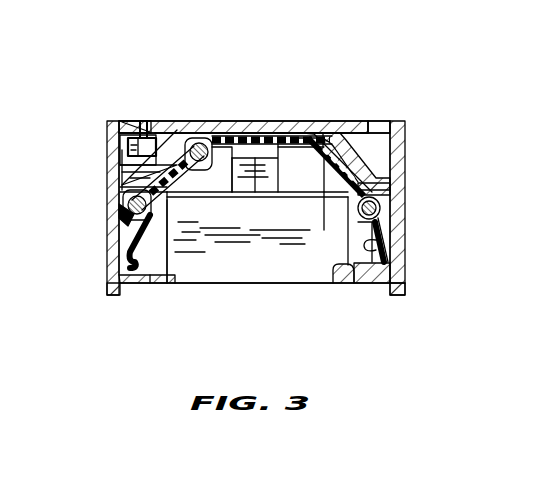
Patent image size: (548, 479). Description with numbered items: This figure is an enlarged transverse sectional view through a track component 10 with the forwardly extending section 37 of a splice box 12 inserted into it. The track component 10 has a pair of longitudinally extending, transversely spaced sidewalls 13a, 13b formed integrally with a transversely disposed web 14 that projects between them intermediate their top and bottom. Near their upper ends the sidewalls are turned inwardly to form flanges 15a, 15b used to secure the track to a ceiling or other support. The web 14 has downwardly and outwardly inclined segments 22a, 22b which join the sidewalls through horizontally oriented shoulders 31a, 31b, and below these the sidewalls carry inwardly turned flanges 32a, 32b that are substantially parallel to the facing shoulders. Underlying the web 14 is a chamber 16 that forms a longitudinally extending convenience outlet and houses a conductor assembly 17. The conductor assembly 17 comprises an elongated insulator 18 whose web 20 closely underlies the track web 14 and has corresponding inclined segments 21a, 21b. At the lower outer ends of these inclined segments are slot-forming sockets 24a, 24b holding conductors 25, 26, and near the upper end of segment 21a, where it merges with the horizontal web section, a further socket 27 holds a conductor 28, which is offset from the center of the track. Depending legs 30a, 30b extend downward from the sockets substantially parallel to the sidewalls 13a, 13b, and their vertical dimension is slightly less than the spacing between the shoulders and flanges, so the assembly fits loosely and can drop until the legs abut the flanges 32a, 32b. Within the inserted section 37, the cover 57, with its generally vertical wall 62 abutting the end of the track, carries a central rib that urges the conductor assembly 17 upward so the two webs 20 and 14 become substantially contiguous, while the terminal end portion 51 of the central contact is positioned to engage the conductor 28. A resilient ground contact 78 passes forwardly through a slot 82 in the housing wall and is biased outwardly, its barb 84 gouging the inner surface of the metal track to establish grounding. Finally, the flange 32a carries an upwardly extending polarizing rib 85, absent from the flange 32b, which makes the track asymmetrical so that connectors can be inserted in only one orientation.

The track component 10 is at (405, 265).
The splice box 12 is at (258, 266).
The sidewall 13a is at (404, 149).
The sidewall 13b is at (115, 154).
The web 14 is at (178, 121).
The flange 15a is at (386, 121).
The flange 15b is at (128, 127).
The chamber 16 is at (130, 285).
The conductor assembly 17 is at (404, 249).
The insulator 18 is at (404, 230).
The web 20 is at (320, 121).
The inclined segment 21a is at (323, 212).
The inclined segment 21b is at (205, 230).
The inclined segment 22a is at (360, 121).
The inclined segment 22b is at (122, 142).
The socket 24a is at (404, 192).
The socket 24b is at (146, 191).
The conductor 25 is at (380, 214).
The conductor 26 is at (128, 210).
The socket 27 is at (196, 121).
The conductor 28 is at (222, 121).
The leg 30a is at (370, 286).
The leg 30b is at (130, 250).
The shoulder 31a is at (404, 167).
The shoulder 31b is at (118, 166).
The flange 32a is at (358, 286).
The flange 32b is at (170, 288).
The forwardly extending section 37 is at (200, 287).
The terminal end portion 51 is at (234, 192).
The cover 57 is at (309, 192).
The vertical wall 62 is at (287, 121).
The ground contact 78 is at (124, 121).
The slot 82 is at (148, 121).
The barb 84 is at (120, 135).
The polarizing rib 85 is at (334, 270).